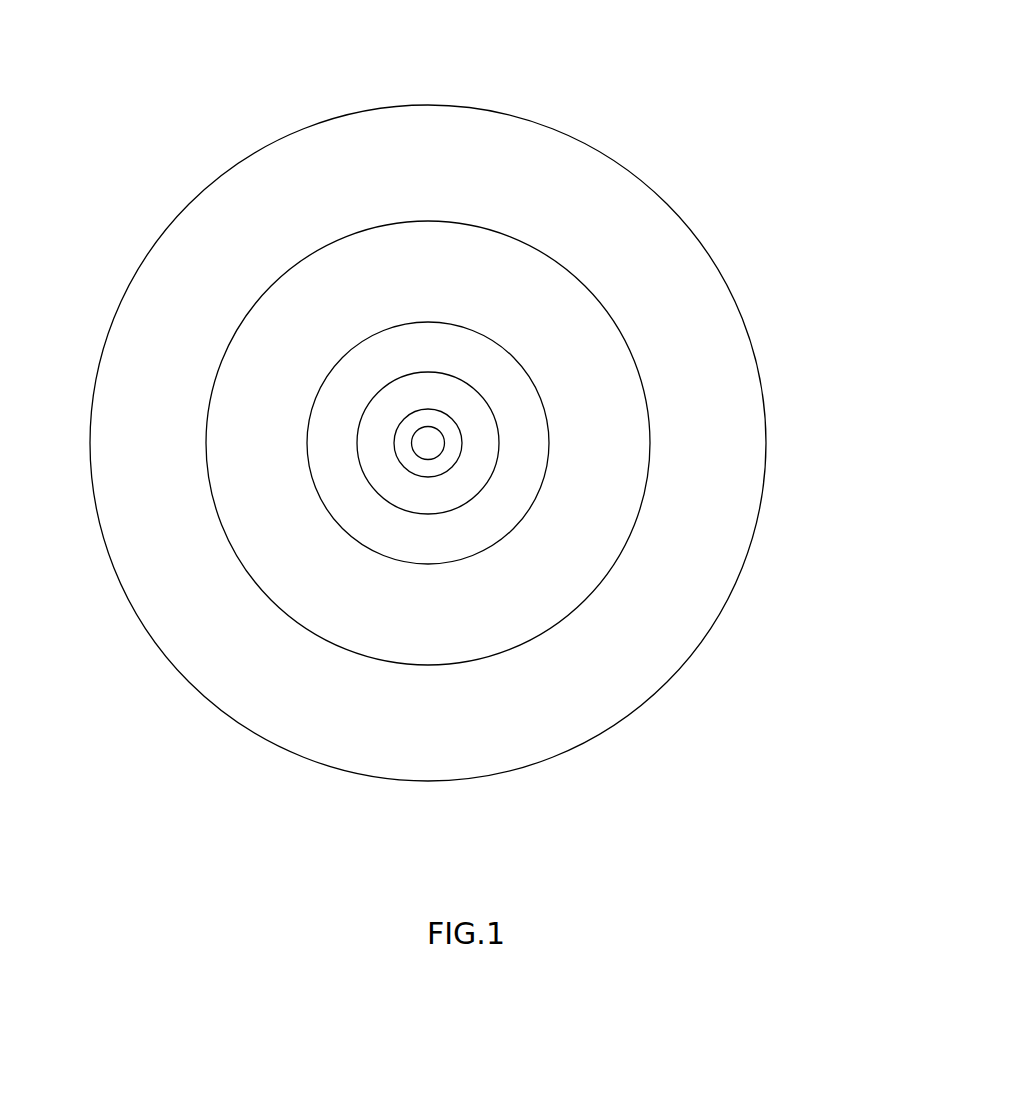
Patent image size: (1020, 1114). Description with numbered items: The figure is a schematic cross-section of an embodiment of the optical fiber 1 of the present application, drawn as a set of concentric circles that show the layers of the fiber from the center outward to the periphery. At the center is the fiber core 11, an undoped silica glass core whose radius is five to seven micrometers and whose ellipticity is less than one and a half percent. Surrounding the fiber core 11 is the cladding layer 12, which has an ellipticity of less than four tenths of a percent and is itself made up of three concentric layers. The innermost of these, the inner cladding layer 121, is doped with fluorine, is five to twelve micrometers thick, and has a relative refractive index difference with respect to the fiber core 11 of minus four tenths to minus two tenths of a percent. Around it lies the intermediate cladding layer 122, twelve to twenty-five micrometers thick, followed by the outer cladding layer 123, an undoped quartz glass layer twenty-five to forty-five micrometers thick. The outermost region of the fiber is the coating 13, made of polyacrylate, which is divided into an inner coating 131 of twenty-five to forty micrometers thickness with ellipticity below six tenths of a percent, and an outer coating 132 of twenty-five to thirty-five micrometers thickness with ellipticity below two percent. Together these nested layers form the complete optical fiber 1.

The optical fiber 1 is at (583, 115).
The fiber core 11 is at (428, 443).
The cladding layer 12 is at (863, 185).
The inner cladding layer 121 is at (449, 450).
The intermediate cladding layer 122 is at (459, 399).
The outer cladding layer 123 is at (453, 347).
The coating 13 is at (106, 90).
The inner coating 131 is at (313, 292).
The outer coating 132 is at (302, 175).